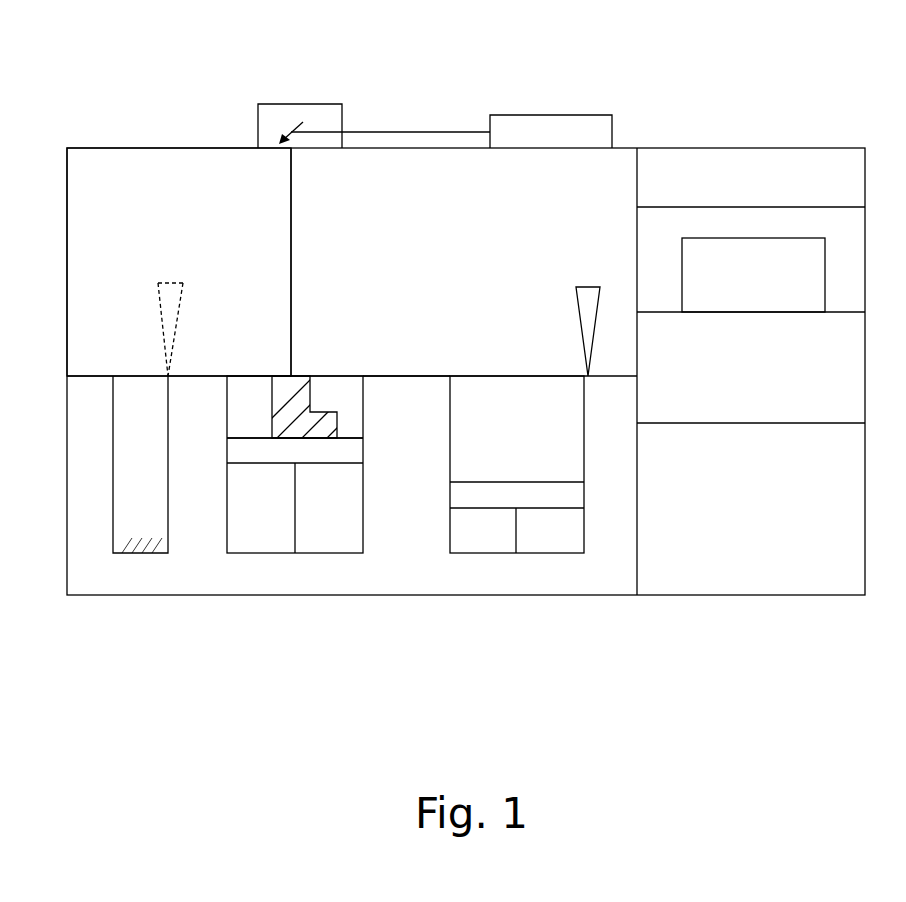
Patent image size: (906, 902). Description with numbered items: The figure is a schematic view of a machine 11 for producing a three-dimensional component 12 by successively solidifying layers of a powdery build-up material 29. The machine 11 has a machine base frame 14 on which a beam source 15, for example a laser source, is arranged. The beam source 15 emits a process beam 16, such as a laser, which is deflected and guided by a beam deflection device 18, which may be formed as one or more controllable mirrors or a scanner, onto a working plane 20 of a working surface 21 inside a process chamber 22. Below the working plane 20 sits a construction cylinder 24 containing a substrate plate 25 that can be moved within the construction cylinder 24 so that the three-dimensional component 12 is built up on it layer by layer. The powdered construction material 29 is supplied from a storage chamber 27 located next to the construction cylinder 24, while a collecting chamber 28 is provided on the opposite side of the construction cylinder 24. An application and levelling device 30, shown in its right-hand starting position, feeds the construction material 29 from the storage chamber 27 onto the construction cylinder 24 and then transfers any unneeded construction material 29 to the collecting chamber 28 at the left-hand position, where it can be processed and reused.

The machine 11 is at (444, 66).
The three-dimensional component 12 is at (306, 358).
The machine base frame 14 is at (508, 625).
The beam source 15 is at (577, 132).
The process beam 16 is at (291, 237).
The beam deflection device 18 is at (280, 118).
The working plane 20 is at (431, 375).
The working surface 21 is at (399, 360).
The process chamber 22 is at (164, 188).
The construction cylinder 24 is at (372, 500).
The substrate plate 25 is at (227, 452).
The storage chamber 27 is at (478, 437).
The collecting chamber 28 is at (143, 496).
The powdery build-up material 29 is at (113, 537).
The application and levelling device 30 is at (163, 300).